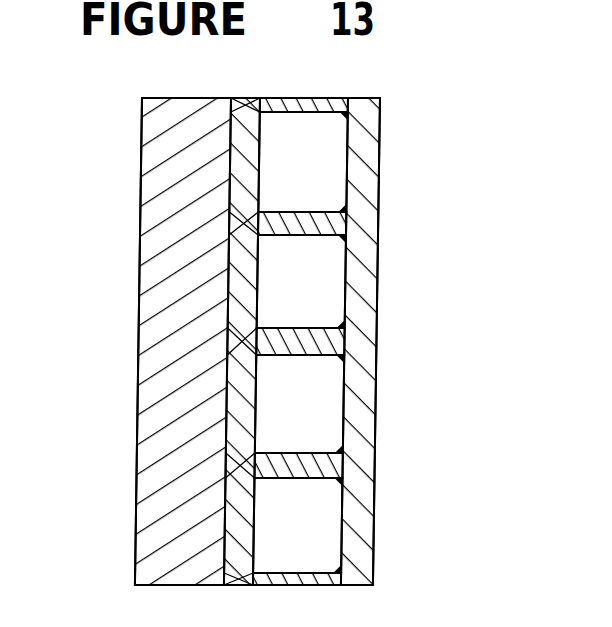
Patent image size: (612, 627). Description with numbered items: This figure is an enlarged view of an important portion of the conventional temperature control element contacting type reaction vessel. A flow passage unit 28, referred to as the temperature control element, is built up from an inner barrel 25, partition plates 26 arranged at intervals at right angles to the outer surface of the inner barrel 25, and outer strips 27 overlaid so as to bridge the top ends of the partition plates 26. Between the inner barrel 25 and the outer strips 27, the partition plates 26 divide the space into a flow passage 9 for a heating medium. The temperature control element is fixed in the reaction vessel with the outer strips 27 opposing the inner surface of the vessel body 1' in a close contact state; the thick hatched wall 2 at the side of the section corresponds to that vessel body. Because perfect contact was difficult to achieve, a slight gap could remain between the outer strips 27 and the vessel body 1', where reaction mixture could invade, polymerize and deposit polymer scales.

The vessel body 1' is at (244, 313).
The substrate block 2 is at (157, 333).
The flow passage 9 is at (317, 285).
The inner barrel 25 is at (365, 368).
The partition plates 26 is at (330, 210).
The outer strips 27 is at (312, 212).
The flow passage unit 28 is at (379, 98).